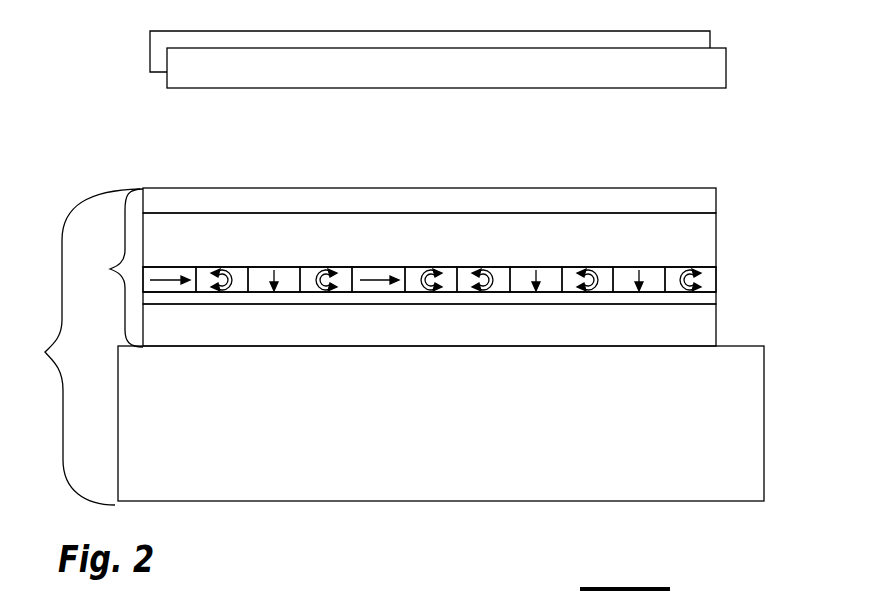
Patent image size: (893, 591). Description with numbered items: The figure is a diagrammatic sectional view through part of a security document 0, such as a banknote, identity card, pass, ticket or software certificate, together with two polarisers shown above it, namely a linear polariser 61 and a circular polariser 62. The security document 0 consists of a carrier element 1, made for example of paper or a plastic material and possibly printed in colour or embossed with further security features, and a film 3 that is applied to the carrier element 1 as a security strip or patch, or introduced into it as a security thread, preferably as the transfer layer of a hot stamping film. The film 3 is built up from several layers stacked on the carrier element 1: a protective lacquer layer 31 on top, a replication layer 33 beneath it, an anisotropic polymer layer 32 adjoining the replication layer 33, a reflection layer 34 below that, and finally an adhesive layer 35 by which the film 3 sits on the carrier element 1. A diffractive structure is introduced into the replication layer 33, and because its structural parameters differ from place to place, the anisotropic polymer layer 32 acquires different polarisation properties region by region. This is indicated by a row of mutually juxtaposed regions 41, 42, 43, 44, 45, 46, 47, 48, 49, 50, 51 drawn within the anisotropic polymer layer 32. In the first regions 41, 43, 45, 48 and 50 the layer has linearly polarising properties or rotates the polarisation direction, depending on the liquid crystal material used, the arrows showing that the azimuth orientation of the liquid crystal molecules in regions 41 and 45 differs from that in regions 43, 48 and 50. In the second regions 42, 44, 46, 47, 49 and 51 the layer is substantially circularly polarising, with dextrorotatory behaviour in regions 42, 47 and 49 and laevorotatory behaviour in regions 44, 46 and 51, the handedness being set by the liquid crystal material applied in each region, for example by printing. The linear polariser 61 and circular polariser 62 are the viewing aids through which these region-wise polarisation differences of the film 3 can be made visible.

The security document 0 is at (79, 347).
The carrier element 1 is at (730, 489).
The film 3 is at (115, 268).
The protective lacquer layer 31 is at (712, 197).
The anisotropic polymer layer 32 is at (712, 277).
The replication layer 33 is at (712, 233).
The reflection layer 34 is at (712, 296).
The adhesive layer 35 is at (712, 333).
The first region 41 is at (181, 270).
The second region 42 is at (240, 272).
The first region 43 is at (285, 272).
The second region 44 is at (333, 272).
The first region 45 is at (395, 272).
The second region 46 is at (447, 272).
The second region 47 is at (500, 272).
The first region 48 is at (552, 272).
The second region 49 is at (603, 272).
The first region 50 is at (650, 272).
The second region 51 is at (708, 272).
The linear polariser 61 is at (705, 72).
The circular polariser 62 is at (155, 45).